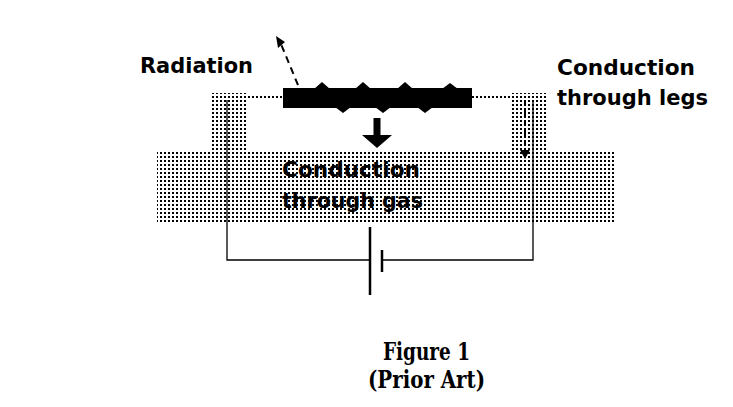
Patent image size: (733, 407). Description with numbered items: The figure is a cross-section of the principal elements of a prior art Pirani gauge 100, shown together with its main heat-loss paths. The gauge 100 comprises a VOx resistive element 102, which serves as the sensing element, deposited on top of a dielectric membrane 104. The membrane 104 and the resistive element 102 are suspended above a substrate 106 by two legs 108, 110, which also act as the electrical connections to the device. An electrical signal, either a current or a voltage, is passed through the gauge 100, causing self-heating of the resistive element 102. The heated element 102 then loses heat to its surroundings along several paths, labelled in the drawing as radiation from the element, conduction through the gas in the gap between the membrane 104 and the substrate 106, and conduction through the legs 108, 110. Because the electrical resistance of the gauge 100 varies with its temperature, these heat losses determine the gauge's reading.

The Pirani gauge 100 is at (110, 98).
The VOx resistive element 102 is at (403, 90).
The dielectric membrane 104 is at (343, 90).
The substrate 106 is at (617, 218).
The leg 108 is at (218, 127).
The leg 110 is at (547, 132).